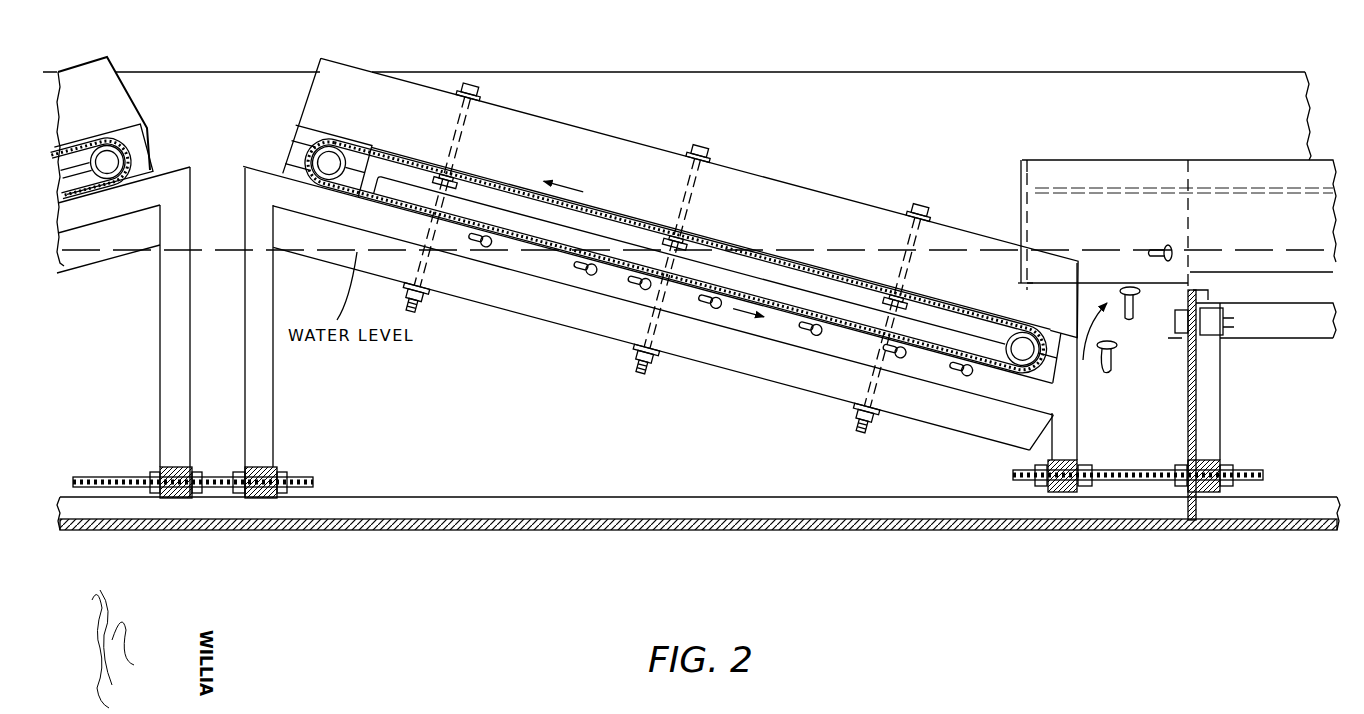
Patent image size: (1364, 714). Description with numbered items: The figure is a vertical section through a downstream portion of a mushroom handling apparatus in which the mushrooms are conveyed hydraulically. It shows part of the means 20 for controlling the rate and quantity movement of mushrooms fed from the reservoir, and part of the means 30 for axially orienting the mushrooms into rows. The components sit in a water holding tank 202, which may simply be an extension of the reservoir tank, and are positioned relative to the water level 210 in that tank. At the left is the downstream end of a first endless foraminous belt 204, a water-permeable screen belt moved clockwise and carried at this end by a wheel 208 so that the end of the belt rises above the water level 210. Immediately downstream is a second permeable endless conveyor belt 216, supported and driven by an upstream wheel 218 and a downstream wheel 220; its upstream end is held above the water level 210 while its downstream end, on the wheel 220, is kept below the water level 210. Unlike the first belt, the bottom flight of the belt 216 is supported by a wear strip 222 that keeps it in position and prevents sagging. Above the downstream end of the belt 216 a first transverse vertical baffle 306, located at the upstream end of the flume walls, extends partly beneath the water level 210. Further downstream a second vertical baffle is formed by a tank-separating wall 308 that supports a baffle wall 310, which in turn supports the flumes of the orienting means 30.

The means for controlling the rate and quantity movement of mushrooms 20 is at (352, 597).
The means for axially orienting the mushrooms 30 is at (1043, 97).
The water holding tank 202 is at (430, 531).
The first endless foraminous belt 204 is at (82, 143).
The wheel 208 is at (112, 157).
The water level 210 is at (210, 256).
The second permeable endless conveyor belt 216 is at (742, 250).
The upstream wheel 218 is at (307, 150).
The downstream wheel 220 is at (1003, 380).
The wear strip 222 is at (570, 237).
The first transverse vertical baffle 306 is at (1018, 203).
The tank-separating wall 308 is at (1187, 386).
The baffle wall 310 is at (1180, 290).